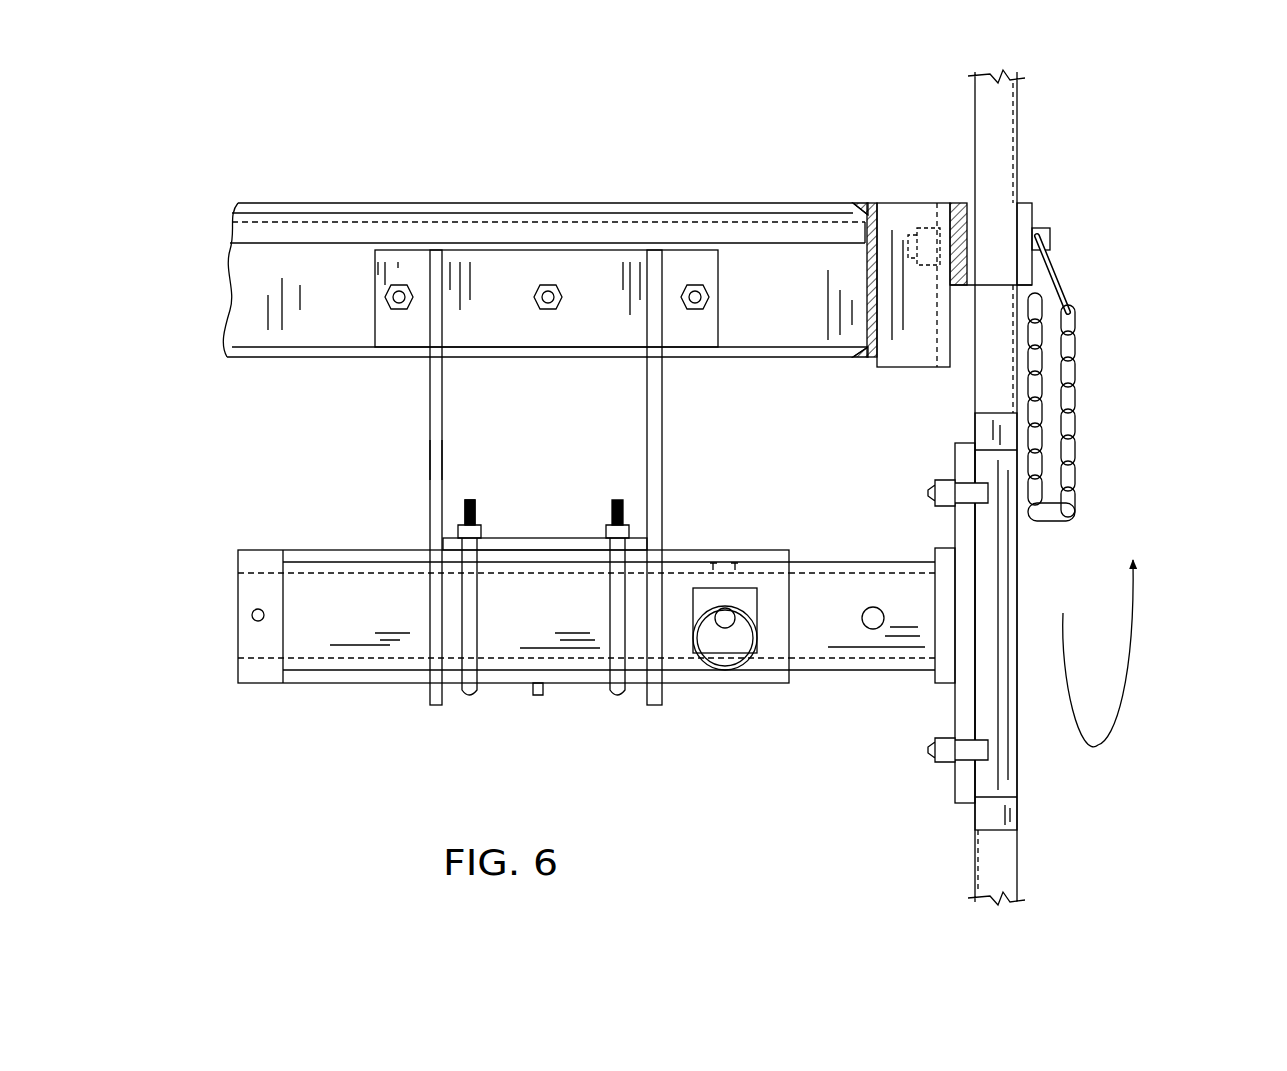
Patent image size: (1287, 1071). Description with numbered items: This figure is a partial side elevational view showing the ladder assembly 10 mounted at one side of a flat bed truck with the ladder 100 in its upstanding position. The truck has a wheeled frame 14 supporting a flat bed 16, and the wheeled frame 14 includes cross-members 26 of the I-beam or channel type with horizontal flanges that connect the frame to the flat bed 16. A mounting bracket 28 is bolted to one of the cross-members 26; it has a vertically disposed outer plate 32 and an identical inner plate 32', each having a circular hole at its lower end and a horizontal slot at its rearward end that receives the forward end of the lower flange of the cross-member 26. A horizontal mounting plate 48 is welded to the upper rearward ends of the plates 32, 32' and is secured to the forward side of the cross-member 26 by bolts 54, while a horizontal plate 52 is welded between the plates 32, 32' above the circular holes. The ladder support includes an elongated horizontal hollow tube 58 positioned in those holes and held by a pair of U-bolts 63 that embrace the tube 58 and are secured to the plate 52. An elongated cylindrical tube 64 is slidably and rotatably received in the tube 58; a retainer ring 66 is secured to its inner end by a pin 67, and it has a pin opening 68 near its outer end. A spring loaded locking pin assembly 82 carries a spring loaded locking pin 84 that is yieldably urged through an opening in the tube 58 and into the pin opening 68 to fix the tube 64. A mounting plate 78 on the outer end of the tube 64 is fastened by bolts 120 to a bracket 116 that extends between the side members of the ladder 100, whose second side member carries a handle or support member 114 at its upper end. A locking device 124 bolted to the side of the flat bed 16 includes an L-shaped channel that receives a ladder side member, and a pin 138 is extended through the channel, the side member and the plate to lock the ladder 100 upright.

The ladder assembly 10 is at (920, 728).
The wheeled frame 14 is at (878, 203).
The flat bed 16 is at (712, 203).
The cross-members 26 is at (316, 258).
The mounting bracket 28 is at (418, 387).
The outer plate 32 is at (705, 477).
The inner plate 32' is at (371, 460).
The mounting plate 48 is at (590, 320).
The plate 52 is at (555, 535).
The bolts 54 is at (548, 283).
The hollow tube 58 is at (390, 685).
The U-bolts 63 is at (470, 702).
The cylindrical tube 64 is at (866, 560).
The retainer ring 66 is at (262, 549).
The pin 67 is at (252, 617).
The pin opening 68 is at (874, 629).
The mounting plate 78 is at (948, 530).
The spring loaded locking pin assembly 82 is at (748, 588).
The spring loaded locking pin 84 is at (720, 668).
The ladder 100 is at (993, 565).
The support member 114 is at (1000, 140).
The bracket 116 is at (1013, 605).
The bolts 120 is at (985, 745).
The locking device 124 is at (1030, 203).
The pin 138 is at (1052, 238).